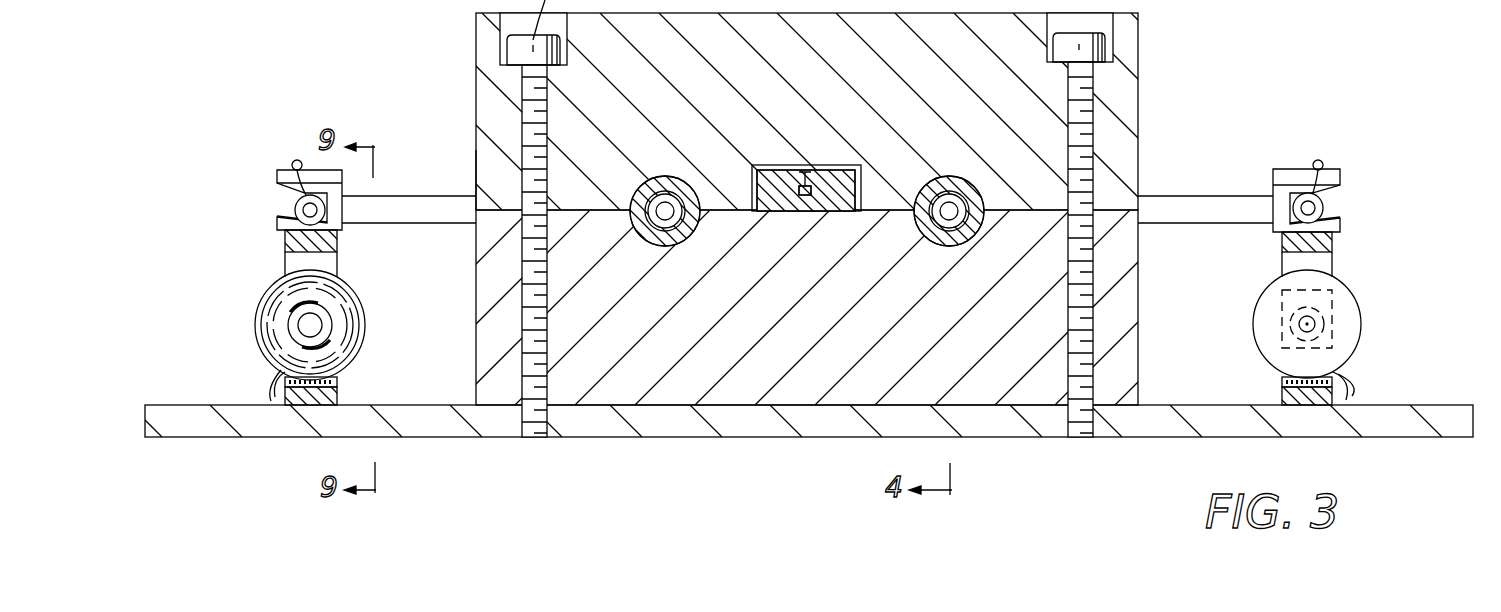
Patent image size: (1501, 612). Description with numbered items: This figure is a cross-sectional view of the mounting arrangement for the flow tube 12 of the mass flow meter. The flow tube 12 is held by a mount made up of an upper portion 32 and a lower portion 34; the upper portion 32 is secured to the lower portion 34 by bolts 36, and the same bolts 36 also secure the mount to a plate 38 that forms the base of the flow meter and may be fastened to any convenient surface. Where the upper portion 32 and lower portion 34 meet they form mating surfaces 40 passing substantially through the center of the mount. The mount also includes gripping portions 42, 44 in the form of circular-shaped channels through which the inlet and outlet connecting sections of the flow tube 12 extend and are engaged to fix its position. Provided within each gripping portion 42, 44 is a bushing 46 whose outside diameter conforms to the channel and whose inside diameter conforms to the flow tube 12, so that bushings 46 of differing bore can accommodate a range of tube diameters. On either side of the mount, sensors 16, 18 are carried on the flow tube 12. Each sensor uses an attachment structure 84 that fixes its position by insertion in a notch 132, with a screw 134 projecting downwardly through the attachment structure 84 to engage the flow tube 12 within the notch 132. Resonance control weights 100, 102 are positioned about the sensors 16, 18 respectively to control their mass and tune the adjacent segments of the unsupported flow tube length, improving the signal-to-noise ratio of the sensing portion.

The flow tube 12 is at (340, 225).
The sensor 16 is at (240, 203).
The sensor 18 is at (1398, 166).
The upper portion 32 is at (1122, 103).
The lower portion 34 is at (1139, 290).
The bolts 36 is at (1092, 50).
The plate 38 is at (1216, 406).
The mating surfaces 40 is at (507, 210).
The gripping portion 42 is at (667, 182).
The gripping portion 44 is at (967, 188).
The bushing 46 is at (663, 236).
The attachment structure 84 is at (336, 205).
The resonance control weight 100 is at (326, 172).
The resonance control weight 102 is at (1287, 177).
The notch 132 is at (285, 208).
The screw 134 is at (292, 165).